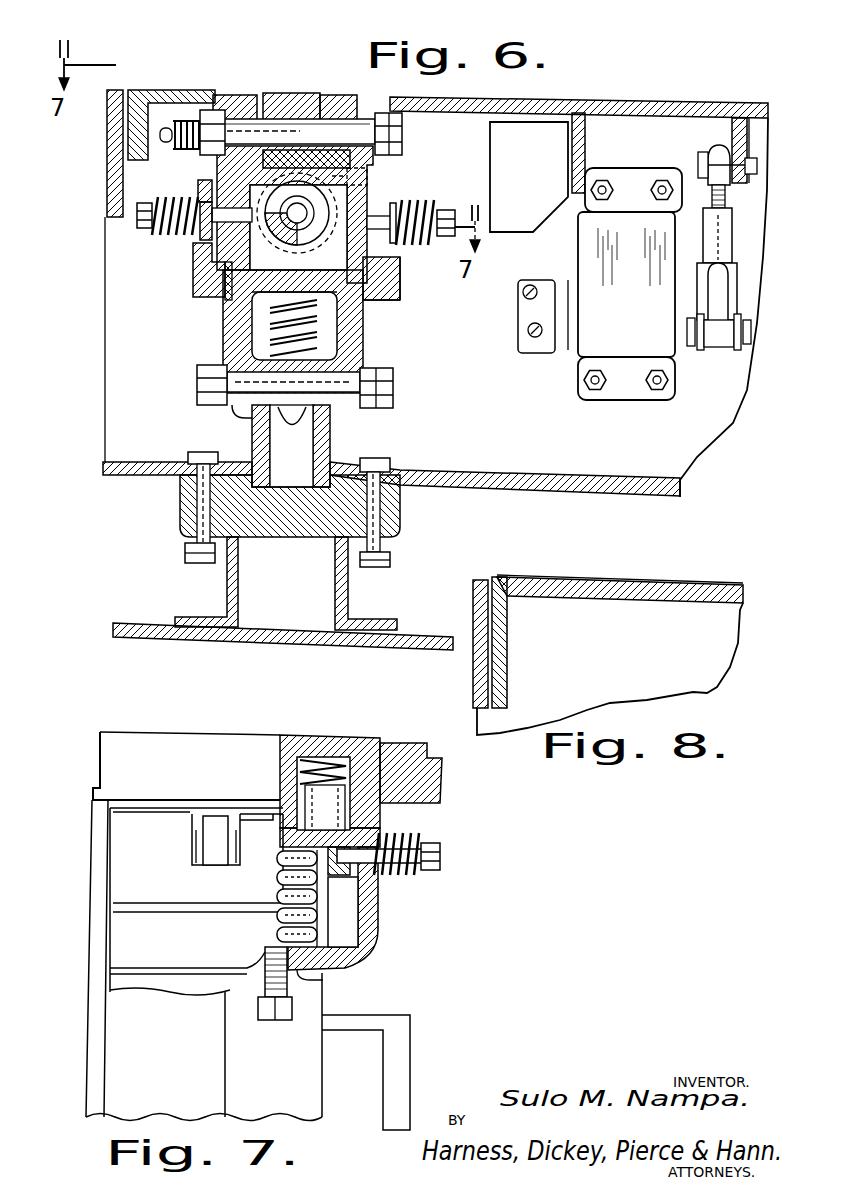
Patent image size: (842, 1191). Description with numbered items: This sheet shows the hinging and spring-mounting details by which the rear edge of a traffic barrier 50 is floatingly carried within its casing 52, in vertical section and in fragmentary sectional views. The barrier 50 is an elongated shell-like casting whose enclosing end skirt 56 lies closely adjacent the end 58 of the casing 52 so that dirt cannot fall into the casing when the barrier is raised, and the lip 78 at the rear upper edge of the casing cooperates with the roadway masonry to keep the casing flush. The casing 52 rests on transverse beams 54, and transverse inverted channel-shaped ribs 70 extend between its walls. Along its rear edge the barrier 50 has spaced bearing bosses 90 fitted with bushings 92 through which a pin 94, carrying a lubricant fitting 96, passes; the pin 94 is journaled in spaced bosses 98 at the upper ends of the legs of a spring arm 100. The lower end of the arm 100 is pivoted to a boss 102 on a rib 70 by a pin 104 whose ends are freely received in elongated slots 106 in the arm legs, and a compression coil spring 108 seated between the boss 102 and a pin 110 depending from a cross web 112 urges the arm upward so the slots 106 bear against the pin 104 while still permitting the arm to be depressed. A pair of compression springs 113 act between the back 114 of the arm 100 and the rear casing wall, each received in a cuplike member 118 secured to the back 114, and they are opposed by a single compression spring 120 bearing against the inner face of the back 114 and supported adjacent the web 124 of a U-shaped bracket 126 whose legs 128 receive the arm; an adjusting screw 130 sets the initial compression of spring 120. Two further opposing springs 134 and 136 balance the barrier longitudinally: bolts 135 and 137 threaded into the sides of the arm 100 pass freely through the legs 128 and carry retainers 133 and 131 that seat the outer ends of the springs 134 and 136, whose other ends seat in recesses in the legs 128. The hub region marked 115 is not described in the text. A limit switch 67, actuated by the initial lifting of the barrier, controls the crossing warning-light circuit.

In FIG. 8, the barrier 50 is at (615, 584).
In FIG. 7, the barrier 50 is at (196, 900).
In FIG. 7, the casing 52 is at (146, 733).
In FIG. 6, the beams 54 is at (350, 590).
In FIG. 6, the end skirt 56 is at (130, 90).
In FIG. 8, the end skirt 56 is at (513, 650).
In FIG. 7, the end skirt 56 is at (92, 843).
In FIG. 6, the end of the casing 58 is at (107, 146).
In FIG. 8, the end of the casing 58 is at (473, 605).
In FIG. 7, the end of the casing 58 is at (90, 1040).
In FIG. 6, the limit switch 67 is at (630, 284).
In FIG. 6, the ribs 70 is at (250, 432).
In FIG. 7, the ribs 70 is at (273, 1045).
In FIG. 7, the lip 78 is at (186, 766).
In FIG. 6, the bearing bosses 90 is at (315, 95).
In FIG. 7, the bearing bosses 90 is at (253, 820).
In FIG. 6, the bushings 92 is at (275, 93).
In FIG. 6, the pin 94 is at (383, 113).
In FIG. 6, the lubricant fitting 96 is at (178, 120).
In FIG. 6, the bosses 98 is at (230, 95).
In FIG. 7, the bosses 98 is at (220, 823).
In FIG. 6, the spring arm 100 is at (368, 332).
In FIG. 7, the spring arm 100 is at (307, 838).
In FIG. 6, the boss 102 is at (330, 427).
In FIG. 6, the pin 104 is at (262, 338).
In FIG. 7, the pin 104 is at (297, 896).
In FIG. 6, the slots 106 is at (237, 367).
In FIG. 6, the compression coil spring 108 is at (330, 313).
In FIG. 6, the pin 110 is at (252, 293).
In FIG. 6, the cross web 112 is at (232, 280).
In FIG. 7, the compression springs 113 is at (322, 760).
In FIG. 7, the back 114 is at (275, 828).
In FIG. 6, the hub 115 is at (298, 221).
In FIG. 6, the cuplike member 118 is at (372, 172).
In FIG. 7, the cuplike member 118 is at (368, 758).
In FIG. 6, the compression spring 120 is at (292, 131).
In FIG. 7, the compression spring 120 is at (378, 893).
In FIG. 7, the web 124 is at (300, 977).
In FIG. 6, the U-shaped bracket 126 is at (408, 292).
In FIG. 7, the U-shaped bracket 126 is at (362, 928).
In FIG. 6, the legs 128 is at (193, 265).
In FIG. 7, the adjusting screw 130 is at (262, 1020).
In FIG. 6, the retainer 131 is at (398, 240).
In FIG. 6, the retainer 133 is at (137, 213).
In FIG. 6, the spring 134 is at (152, 226).
In FIG. 6, the bolt 135 is at (200, 205).
In FIG. 6, the spring 136 is at (420, 200).
In FIG. 7, the spring 136 is at (412, 843).
In FIG. 6, the bolt 137 is at (445, 210).